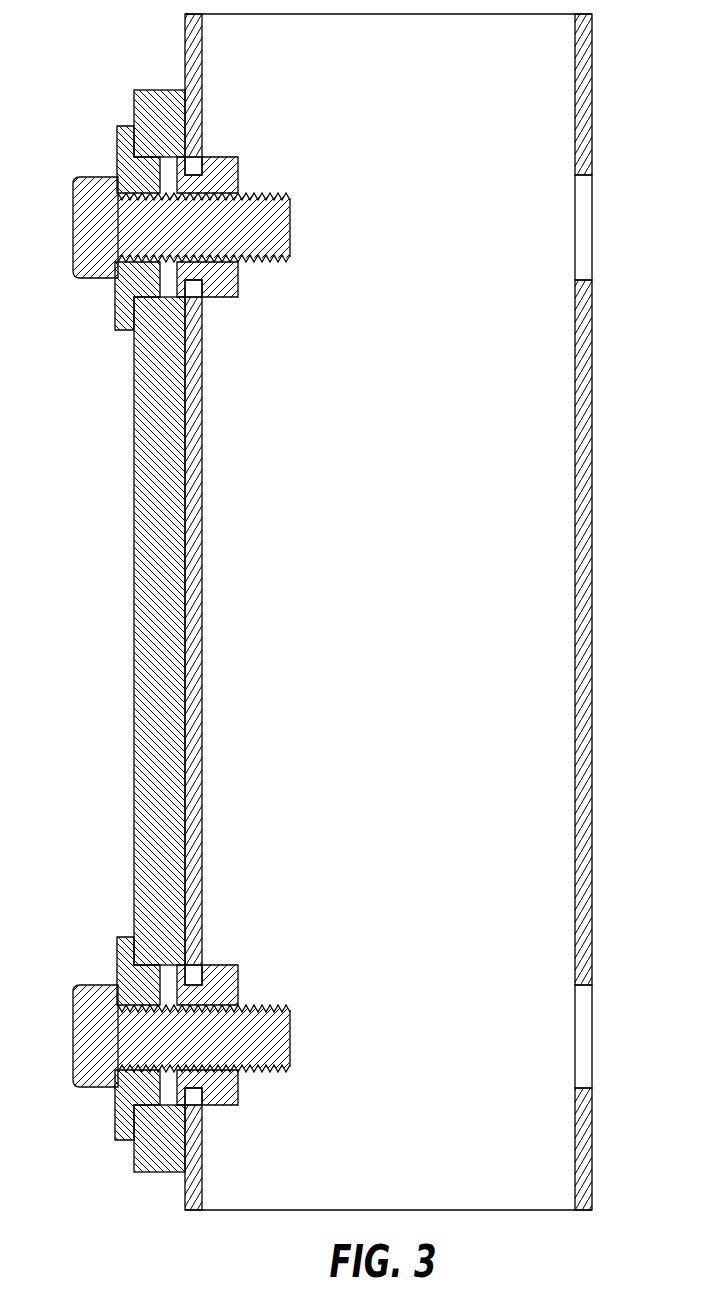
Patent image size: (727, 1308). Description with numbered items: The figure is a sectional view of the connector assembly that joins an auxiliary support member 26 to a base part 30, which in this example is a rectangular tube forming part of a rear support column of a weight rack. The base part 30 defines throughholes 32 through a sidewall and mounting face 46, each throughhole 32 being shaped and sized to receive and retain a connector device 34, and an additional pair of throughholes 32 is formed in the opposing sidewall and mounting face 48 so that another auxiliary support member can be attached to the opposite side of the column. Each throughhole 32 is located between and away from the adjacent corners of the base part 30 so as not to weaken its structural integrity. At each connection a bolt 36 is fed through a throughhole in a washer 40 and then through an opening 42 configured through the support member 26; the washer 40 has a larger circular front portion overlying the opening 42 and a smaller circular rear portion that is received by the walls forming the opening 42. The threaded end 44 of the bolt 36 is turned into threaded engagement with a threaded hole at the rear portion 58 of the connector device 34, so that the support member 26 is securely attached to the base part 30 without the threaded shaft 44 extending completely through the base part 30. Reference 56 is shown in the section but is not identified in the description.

The auxiliary support member 26 is at (150, 467).
The base part 30 is at (604, 155).
The throughhole 32 is at (584, 178).
The connector device 34 is at (180, 591).
The bolt 36 is at (177, 638).
The washer 40 is at (127, 125).
The opening 42 is at (160, 289).
The threaded end 44 is at (285, 192).
The sidewall and mounting face 46 is at (188, 26).
The opposing sidewall and mounting face 48 is at (595, 37).
The nut 56 is at (168, 270).
The rear portion 58 is at (244, 168).